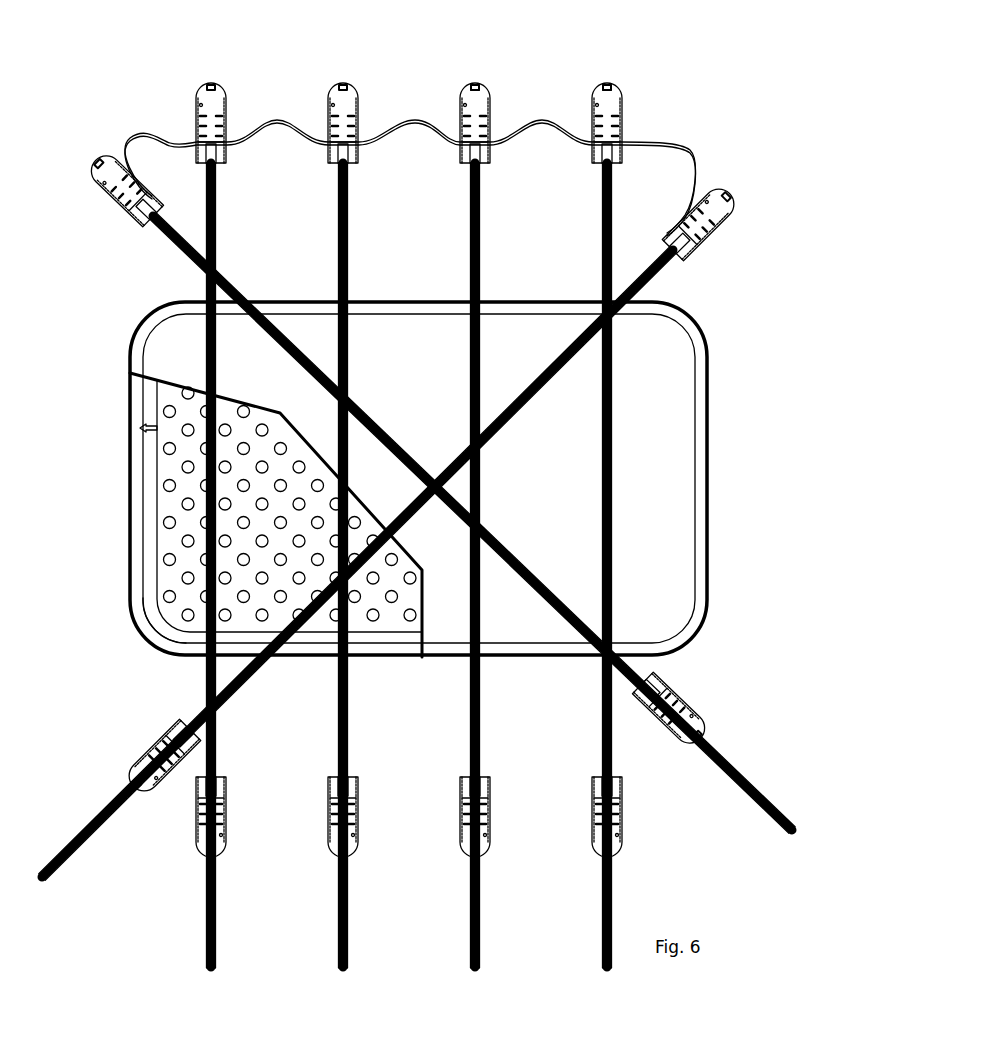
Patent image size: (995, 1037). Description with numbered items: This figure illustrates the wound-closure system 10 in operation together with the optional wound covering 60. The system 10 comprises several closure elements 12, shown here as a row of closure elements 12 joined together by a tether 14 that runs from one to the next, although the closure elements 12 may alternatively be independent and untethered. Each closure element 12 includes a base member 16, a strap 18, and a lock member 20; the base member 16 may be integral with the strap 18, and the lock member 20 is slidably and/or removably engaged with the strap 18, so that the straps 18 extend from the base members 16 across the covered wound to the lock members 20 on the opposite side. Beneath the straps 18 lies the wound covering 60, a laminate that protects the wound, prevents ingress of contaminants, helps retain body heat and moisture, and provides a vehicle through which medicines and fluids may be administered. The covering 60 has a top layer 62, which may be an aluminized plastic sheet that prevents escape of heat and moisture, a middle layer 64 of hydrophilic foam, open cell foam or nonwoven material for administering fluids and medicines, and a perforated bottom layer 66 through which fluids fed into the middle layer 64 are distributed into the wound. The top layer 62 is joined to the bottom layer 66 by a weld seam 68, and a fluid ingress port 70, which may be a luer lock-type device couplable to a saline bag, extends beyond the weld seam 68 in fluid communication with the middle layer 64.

The system for closure of a wound 10 is at (417, 489).
The closure element 12 is at (368, 85).
The tether 14 is at (427, 133).
The base member 16 is at (490, 90).
The strap 18 is at (348, 373).
The lock member 20 is at (124, 778).
The wound covering 60 is at (402, 508).
The top layer 62 is at (683, 497).
The middle layer 64 is at (388, 618).
The bottom layer 66 is at (135, 530).
The weld seam 68 is at (146, 592).
The fluid ingress port 70 is at (138, 428).